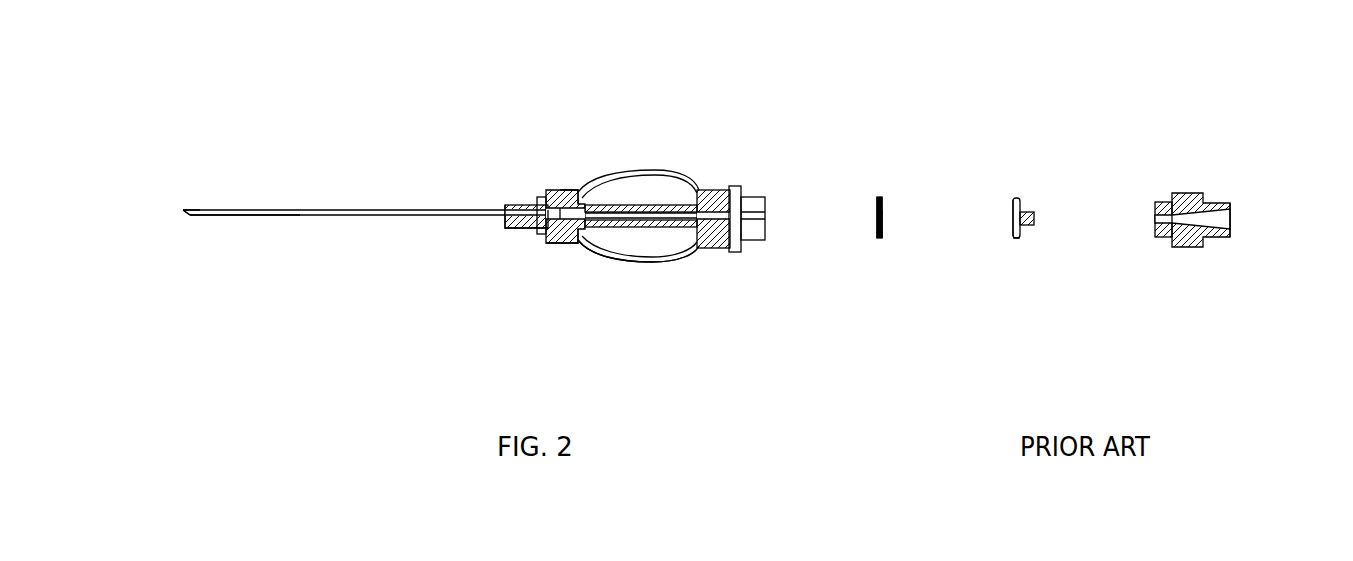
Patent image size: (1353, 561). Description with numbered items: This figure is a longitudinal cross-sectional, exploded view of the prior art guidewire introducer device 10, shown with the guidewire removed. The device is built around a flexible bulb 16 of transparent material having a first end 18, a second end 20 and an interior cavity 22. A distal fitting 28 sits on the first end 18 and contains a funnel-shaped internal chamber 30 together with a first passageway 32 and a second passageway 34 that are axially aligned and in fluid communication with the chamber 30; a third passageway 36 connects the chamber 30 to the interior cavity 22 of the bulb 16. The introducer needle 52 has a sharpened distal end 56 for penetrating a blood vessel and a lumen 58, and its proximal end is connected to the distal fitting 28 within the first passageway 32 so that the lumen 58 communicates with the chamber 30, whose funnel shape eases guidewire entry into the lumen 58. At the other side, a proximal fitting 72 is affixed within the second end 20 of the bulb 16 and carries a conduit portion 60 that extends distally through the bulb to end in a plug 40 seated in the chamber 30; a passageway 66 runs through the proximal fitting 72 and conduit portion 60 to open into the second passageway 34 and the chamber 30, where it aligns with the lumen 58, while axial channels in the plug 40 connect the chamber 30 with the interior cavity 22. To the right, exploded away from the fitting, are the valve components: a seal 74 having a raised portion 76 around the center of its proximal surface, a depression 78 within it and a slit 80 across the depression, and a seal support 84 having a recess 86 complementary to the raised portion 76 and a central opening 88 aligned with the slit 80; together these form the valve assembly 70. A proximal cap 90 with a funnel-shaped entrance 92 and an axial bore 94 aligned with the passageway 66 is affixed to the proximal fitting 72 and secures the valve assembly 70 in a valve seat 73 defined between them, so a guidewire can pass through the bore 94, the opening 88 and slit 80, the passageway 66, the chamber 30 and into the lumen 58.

The guidewire introducer device 10 is at (663, 266).
The flexible bulb 16 is at (598, 176).
The first end 18 is at (542, 188).
The second end 20 is at (739, 185).
The interior cavity 22 is at (634, 192).
The distal fitting 28 is at (513, 201).
The internal chamber 30 is at (538, 199).
The first passageway 32 is at (498, 223).
The second passageway 34 is at (551, 223).
The third passageway 36 is at (576, 244).
The plug 40 is at (573, 188).
The introducer needle 52 is at (299, 218).
The distal end 56 is at (191, 218).
The lumen 58 is at (181, 214).
The conduit portion 60 is at (651, 230).
The passageway 66 is at (663, 204).
The proximal fitting 72 is at (738, 254).
The valve seat 73 is at (756, 232).
The seal 74 is at (878, 195).
The raised portion 76 is at (884, 203).
The depression 78 is at (884, 219).
The slit 80 is at (876, 223).
The seal support 84 is at (1018, 196).
The recess 86 is at (1009, 224).
The central opening 88 is at (1036, 220).
The valve assembly 70 is at (1027, 243).
The proximal cap 90 is at (1213, 199).
The funnel-shaped entrance 92 is at (1222, 236).
The axial bore 94 is at (1180, 230).